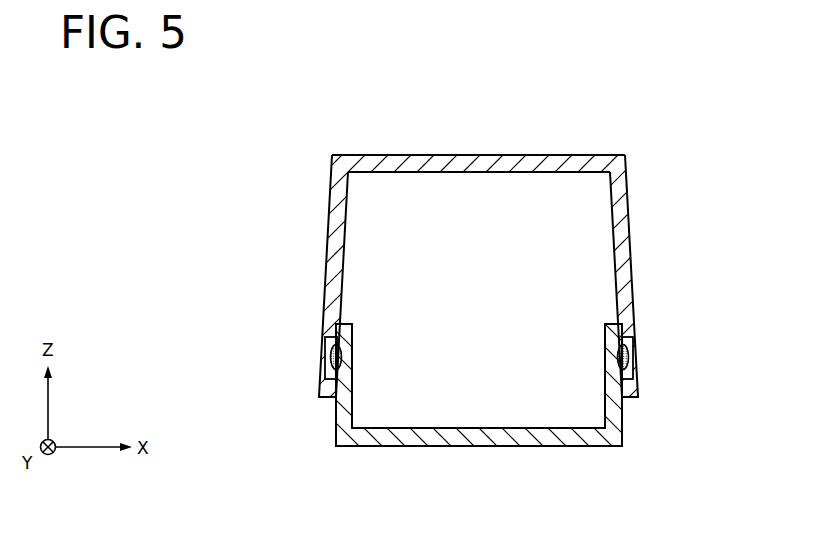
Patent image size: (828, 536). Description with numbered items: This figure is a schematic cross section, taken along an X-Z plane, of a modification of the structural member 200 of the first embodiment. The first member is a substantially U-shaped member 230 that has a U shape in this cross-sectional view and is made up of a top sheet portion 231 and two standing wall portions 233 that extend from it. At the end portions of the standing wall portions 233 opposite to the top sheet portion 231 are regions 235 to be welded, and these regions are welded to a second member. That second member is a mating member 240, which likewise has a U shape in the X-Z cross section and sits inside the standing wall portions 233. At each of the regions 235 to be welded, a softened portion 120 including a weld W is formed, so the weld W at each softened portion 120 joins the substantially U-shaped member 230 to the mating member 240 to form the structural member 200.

The sensor module assembly 200 is at (212, 100).
The substantially U-shaped member 230 is at (383, 131).
The top sheet portion 231 is at (483, 154).
The standing wall portions 233 is at (328, 213).
The regions to be welded 235 is at (325, 346).
The softened portion 120 is at (331, 368).
The mating member 240 is at (487, 457).
The weld W is at (340, 384).